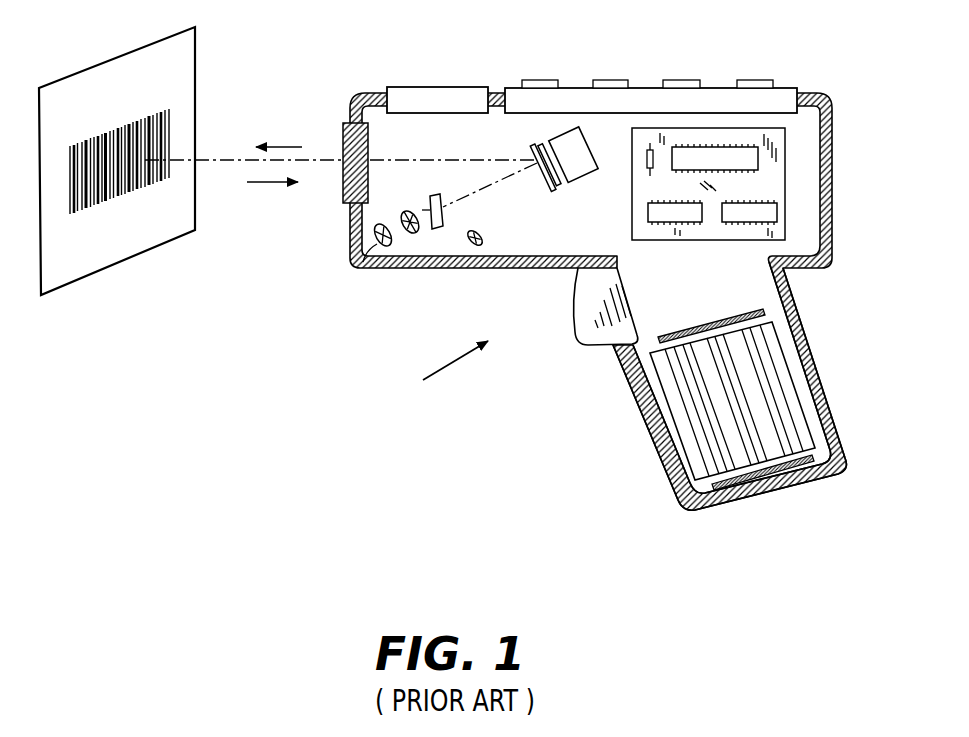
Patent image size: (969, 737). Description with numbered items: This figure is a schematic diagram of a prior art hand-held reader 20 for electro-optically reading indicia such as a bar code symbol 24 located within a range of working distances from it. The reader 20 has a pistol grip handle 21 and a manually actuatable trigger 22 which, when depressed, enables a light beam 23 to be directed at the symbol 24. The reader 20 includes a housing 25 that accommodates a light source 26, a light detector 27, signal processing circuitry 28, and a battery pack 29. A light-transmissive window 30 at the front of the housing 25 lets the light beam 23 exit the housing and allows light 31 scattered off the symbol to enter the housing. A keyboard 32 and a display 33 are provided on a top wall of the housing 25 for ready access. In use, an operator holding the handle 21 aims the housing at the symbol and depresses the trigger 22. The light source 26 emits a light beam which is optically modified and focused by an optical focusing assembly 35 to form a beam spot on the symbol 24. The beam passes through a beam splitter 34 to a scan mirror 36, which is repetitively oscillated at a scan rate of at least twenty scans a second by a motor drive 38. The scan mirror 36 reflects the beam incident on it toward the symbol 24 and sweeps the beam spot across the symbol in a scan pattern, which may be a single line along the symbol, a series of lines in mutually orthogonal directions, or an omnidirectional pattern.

The hand-held reader 20 is at (441, 368).
The pistol grip handle 21 is at (668, 476).
The trigger 22 is at (593, 335).
The light beam 23 is at (290, 147).
The bar code symbol 24 is at (162, 122).
The housing 25 is at (833, 240).
The light source 26 is at (355, 263).
The light detector 27 is at (483, 241).
The signal processing circuitry 28 is at (772, 187).
The battery pack 29 is at (760, 355).
The light-transmissive window 30 is at (343, 140).
The scattered light 31 is at (276, 185).
The keyboard 32 is at (723, 92).
The display 33 is at (422, 95).
The beam splitter 34 is at (443, 226).
The optical focusing assembly 35 is at (413, 233).
The scan mirror 36 is at (536, 152).
The motor drive 38 is at (572, 180).